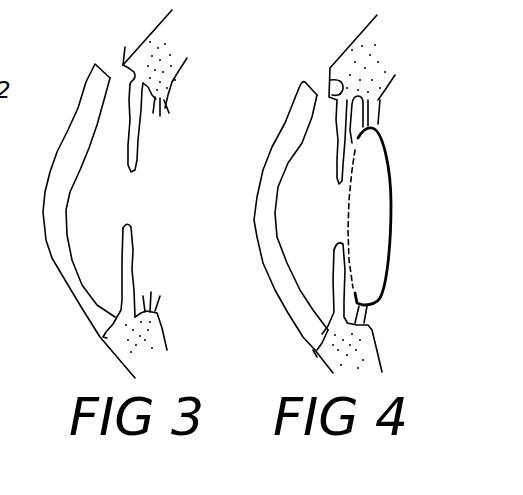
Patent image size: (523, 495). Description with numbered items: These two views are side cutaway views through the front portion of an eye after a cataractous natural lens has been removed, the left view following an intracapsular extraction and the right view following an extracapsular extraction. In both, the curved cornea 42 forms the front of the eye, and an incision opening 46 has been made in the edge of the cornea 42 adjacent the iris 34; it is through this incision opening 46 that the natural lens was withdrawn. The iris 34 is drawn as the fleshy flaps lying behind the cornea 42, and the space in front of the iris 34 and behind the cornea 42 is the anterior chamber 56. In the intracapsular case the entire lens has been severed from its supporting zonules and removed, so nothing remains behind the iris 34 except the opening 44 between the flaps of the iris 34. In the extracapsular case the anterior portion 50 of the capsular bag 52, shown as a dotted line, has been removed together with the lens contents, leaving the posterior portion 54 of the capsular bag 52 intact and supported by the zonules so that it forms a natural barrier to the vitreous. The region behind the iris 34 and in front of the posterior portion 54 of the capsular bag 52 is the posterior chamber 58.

In FIG. 3, the iris 34 is at (139, 149).
In FIG. 4, the iris 34 is at (338, 293).
In FIG. 3, the cornea 42 is at (80, 306).
In FIG. 4, the cornea 42 is at (297, 333).
In FIG. 3, the gap between band and tissue 44 is at (128, 200).
In FIG. 4, the gap between band and tissue 44 is at (338, 228).
In FIG. 3, the incision opening 46 is at (109, 57).
In FIG. 4, the incision opening 46 is at (322, 77).
In FIG. 4, the anterior portion of the capsular bag 50 is at (345, 212).
In FIG. 4, the capsular bag 52 is at (380, 121).
In FIG. 4, the posterior portion of the capsular bag 54 is at (389, 198).
In FIG. 3, the anterior chamber 56 is at (107, 208).
In FIG. 4, the anterior chamber 56 is at (321, 186).
In FIG. 4, the posterior chamber 58 is at (372, 238).